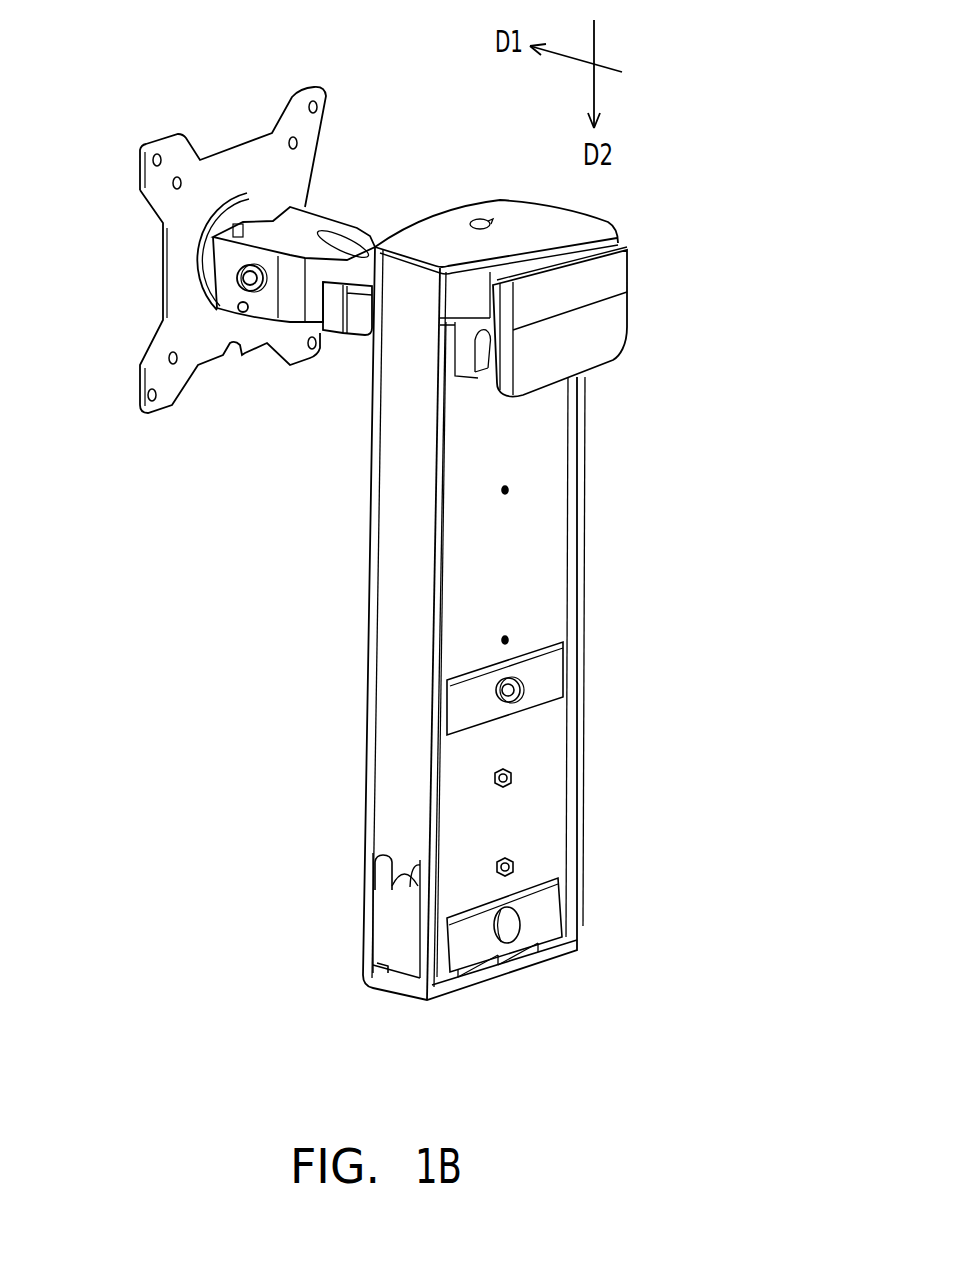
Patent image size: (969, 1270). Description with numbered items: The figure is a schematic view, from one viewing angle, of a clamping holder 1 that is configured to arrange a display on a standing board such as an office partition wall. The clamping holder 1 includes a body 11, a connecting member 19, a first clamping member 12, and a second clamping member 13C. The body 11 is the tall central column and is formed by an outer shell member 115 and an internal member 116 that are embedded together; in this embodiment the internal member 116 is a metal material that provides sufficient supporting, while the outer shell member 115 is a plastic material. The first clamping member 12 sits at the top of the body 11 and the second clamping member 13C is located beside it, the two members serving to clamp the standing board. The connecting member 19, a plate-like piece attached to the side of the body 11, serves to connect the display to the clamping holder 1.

The clamping holder 1 is at (190, 594).
The body 11 is at (260, 840).
The outer shell member 115 is at (400, 808).
The internal member 116 is at (462, 888).
The first clamping member 12 is at (590, 223).
The second clamping member 13C is at (605, 333).
The connecting member 19 is at (183, 250).